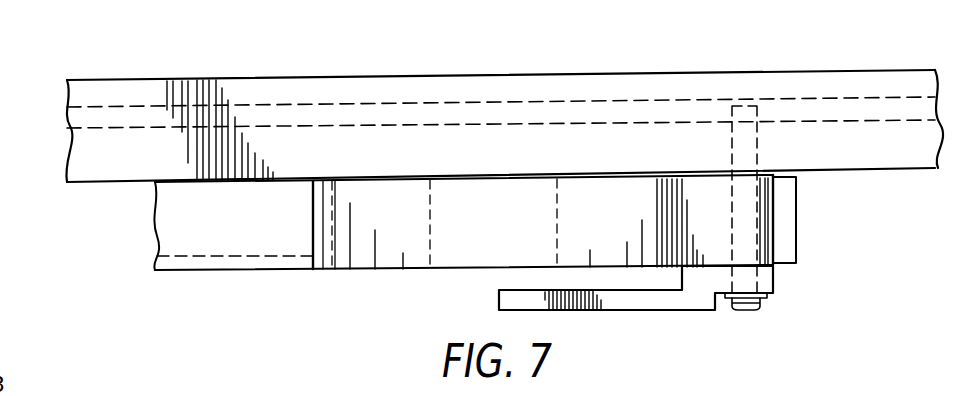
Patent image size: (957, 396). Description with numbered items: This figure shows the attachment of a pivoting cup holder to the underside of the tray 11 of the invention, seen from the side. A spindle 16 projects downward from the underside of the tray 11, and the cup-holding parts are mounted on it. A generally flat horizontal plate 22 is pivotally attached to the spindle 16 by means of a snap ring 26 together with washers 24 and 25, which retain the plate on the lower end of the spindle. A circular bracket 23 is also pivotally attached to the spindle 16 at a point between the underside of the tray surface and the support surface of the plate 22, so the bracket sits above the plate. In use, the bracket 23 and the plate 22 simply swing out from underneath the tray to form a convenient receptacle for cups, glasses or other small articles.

The upper support rail 11 is at (508, 73).
The spindle 16 is at (728, 121).
The horizontal plate 22 is at (657, 298).
The circular bracket 23 is at (406, 274).
The washer 24 is at (781, 256).
The washer 25 is at (777, 297).
The snap ring 26 is at (764, 311).